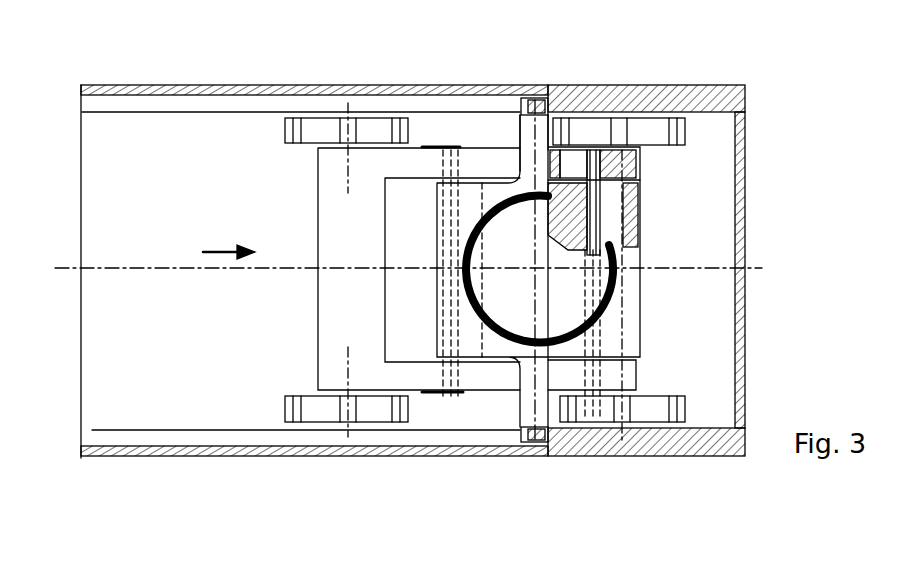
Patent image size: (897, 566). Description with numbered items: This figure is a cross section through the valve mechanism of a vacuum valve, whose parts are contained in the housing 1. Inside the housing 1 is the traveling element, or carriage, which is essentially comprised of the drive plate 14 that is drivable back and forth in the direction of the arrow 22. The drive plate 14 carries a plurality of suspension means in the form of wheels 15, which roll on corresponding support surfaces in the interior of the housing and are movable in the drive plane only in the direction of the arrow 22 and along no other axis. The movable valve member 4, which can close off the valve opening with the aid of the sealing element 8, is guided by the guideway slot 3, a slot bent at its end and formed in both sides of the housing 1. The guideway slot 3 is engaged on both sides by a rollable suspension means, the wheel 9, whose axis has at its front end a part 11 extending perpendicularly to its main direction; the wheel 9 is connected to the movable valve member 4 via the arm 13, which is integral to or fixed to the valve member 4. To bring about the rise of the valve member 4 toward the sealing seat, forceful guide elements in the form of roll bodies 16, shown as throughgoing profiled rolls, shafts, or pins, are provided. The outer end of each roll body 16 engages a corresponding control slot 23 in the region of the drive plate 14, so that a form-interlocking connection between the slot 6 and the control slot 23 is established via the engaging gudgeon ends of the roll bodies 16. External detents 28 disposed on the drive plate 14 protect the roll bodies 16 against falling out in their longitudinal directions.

The housing 1 is at (157, 88).
The guideway slot 3 is at (229, 101).
The movable valve member 4 is at (638, 318).
The slot 6 is at (614, 222).
The sealing element 8 is at (511, 346).
The rollable suspension means (wheel or roller) 9 is at (535, 90).
The part 11 is at (538, 95).
The arm 13 is at (525, 137).
The drive plate 14 is at (323, 359).
The suspension means (wheels) 15 is at (318, 130).
The roll bodies 16 is at (445, 162).
The arrow 22 is at (217, 252).
The control slot 23 is at (573, 162).
The external detents 28 is at (443, 394).